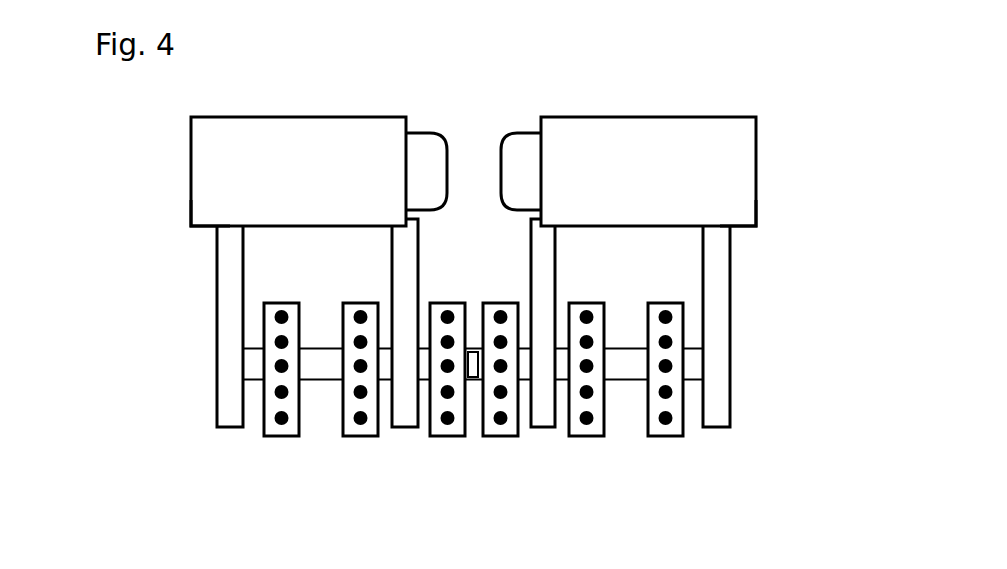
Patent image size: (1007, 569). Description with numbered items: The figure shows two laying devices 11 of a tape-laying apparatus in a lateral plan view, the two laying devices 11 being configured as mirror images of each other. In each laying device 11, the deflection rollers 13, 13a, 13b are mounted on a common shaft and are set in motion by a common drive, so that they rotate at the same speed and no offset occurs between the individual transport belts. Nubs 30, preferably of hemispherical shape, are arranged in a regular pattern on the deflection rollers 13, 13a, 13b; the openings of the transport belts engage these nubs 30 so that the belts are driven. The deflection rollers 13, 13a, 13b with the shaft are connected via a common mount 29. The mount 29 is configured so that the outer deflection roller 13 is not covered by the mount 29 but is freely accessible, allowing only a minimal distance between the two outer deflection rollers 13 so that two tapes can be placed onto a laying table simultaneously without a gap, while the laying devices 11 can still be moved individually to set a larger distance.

The laying device 11 is at (271, 100).
The mount 29 is at (190, 200).
The nubs 30 is at (281, 342).
The deflection roller 13 is at (500, 436).
The deflection roller 13a is at (355, 436).
The deflection roller 13b is at (273, 436).